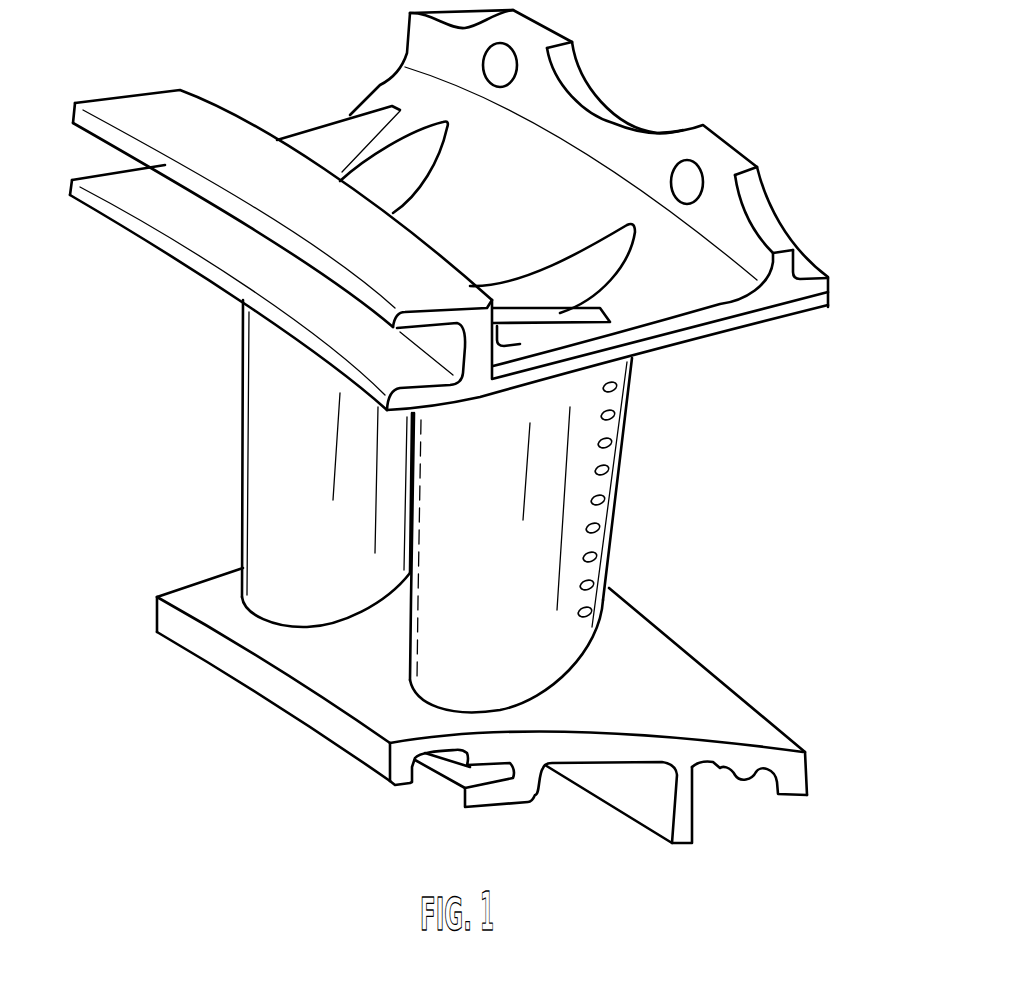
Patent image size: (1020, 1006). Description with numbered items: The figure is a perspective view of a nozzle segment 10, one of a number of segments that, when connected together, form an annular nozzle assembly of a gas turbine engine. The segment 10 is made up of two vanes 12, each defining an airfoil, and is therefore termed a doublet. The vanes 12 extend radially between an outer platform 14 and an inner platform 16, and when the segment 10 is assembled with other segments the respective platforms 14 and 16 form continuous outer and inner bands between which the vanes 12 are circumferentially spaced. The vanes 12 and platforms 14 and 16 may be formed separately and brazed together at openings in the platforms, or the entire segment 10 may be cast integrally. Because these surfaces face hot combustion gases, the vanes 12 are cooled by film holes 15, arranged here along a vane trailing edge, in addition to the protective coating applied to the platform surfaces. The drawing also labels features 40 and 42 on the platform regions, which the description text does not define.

The nozzle segment 10 is at (472, 426).
The vanes 12 is at (474, 506).
The outer platform 14 is at (552, 210).
The film holes 15 is at (641, 499).
The inner platform 16 is at (506, 705).
The rail 40 is at (264, 250).
The gas path surface 42 is at (708, 619).